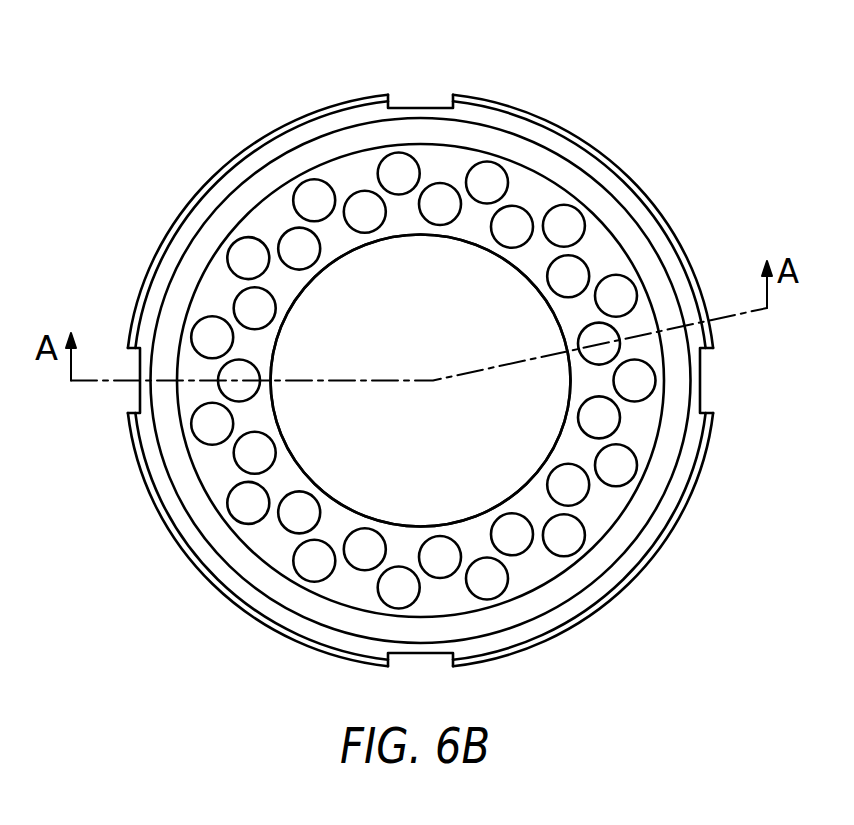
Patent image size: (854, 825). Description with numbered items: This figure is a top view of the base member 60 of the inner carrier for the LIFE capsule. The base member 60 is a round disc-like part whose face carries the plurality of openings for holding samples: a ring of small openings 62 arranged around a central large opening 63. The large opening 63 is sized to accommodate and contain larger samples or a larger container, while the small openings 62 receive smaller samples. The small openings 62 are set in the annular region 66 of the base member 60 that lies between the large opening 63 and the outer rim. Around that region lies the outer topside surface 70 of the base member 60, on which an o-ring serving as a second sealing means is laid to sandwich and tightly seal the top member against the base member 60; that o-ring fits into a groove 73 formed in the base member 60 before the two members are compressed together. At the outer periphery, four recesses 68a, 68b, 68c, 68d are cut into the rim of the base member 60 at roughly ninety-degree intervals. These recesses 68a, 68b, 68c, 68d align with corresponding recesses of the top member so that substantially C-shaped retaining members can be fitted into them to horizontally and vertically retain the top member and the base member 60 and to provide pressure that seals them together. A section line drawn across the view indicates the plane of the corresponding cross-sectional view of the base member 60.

The base member 60 is at (163, 218).
The small openings 62 is at (488, 182).
The large opening 63 is at (436, 452).
The ball retainer 66 is at (637, 427).
The recess 68a is at (130, 399).
The recess 68b is at (430, 653).
The recess 68c is at (703, 378).
The recess 68d is at (420, 107).
The outer topside surface 70 is at (613, 183).
The groove 73 is at (628, 233).